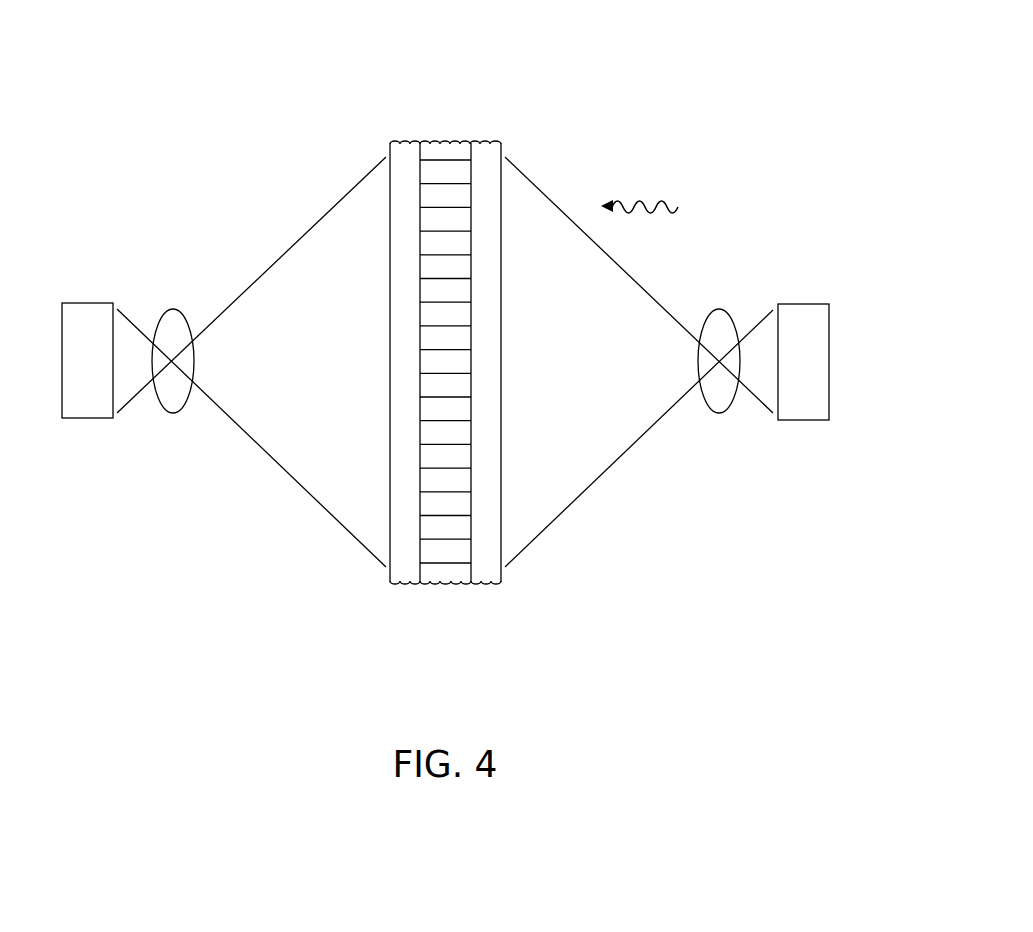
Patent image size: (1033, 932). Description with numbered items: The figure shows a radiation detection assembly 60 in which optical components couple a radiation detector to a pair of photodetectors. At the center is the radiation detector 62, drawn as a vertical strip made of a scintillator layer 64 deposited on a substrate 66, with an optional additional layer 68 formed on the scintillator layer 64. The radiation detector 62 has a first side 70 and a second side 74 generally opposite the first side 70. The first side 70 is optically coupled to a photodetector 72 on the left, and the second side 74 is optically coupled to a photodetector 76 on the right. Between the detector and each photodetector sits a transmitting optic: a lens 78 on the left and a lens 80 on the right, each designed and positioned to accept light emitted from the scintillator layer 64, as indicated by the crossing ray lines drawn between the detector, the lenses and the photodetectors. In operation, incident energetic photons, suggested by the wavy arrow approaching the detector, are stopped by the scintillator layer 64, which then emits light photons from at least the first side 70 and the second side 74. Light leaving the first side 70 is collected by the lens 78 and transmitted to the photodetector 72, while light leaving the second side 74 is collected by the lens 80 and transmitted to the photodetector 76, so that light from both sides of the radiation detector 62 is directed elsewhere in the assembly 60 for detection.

The detection assembly 60 is at (631, 41).
The radiation detector 62 is at (453, 648).
The scintillator layer 64 is at (444, 142).
The substrate 66 is at (500, 585).
The layer 68 is at (390, 585).
The first side 70 is at (389, 147).
The photodetector 72 is at (88, 303).
The second side 74 is at (503, 147).
The photodetector 76 is at (798, 304).
The lens 78 is at (172, 413).
The lens 80 is at (722, 413).